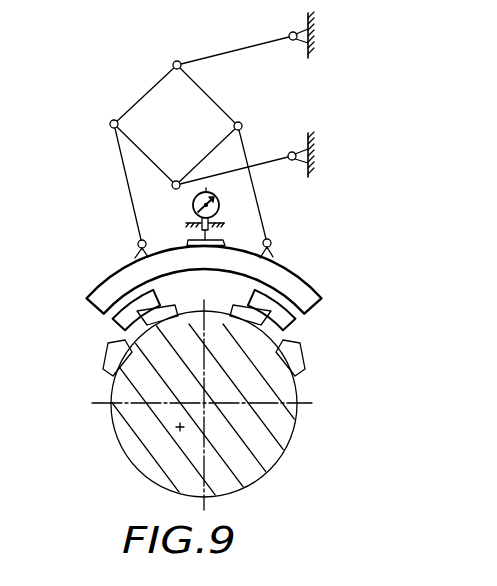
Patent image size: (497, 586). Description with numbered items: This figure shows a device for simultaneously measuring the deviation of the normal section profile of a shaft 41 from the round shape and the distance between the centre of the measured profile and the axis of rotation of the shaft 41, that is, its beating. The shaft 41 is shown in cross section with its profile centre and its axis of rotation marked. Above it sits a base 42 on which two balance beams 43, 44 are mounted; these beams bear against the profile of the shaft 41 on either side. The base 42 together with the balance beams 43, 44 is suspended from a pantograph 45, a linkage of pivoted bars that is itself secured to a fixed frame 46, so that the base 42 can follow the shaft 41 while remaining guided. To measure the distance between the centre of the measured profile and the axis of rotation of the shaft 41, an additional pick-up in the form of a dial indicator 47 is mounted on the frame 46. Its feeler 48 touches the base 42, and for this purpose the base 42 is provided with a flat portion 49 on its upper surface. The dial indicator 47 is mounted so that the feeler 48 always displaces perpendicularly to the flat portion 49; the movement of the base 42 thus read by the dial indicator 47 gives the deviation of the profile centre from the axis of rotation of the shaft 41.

The shaft 41 is at (133, 468).
The base 42 is at (305, 288).
The balance beam 43 is at (313, 345).
The balance beam 44 is at (307, 377).
The pantograph 45 is at (239, 37).
The frame 46 is at (300, 33).
The dial indicator 47 is at (192, 204).
The feeler 48 is at (201, 233).
The flat portion 49 is at (217, 239).